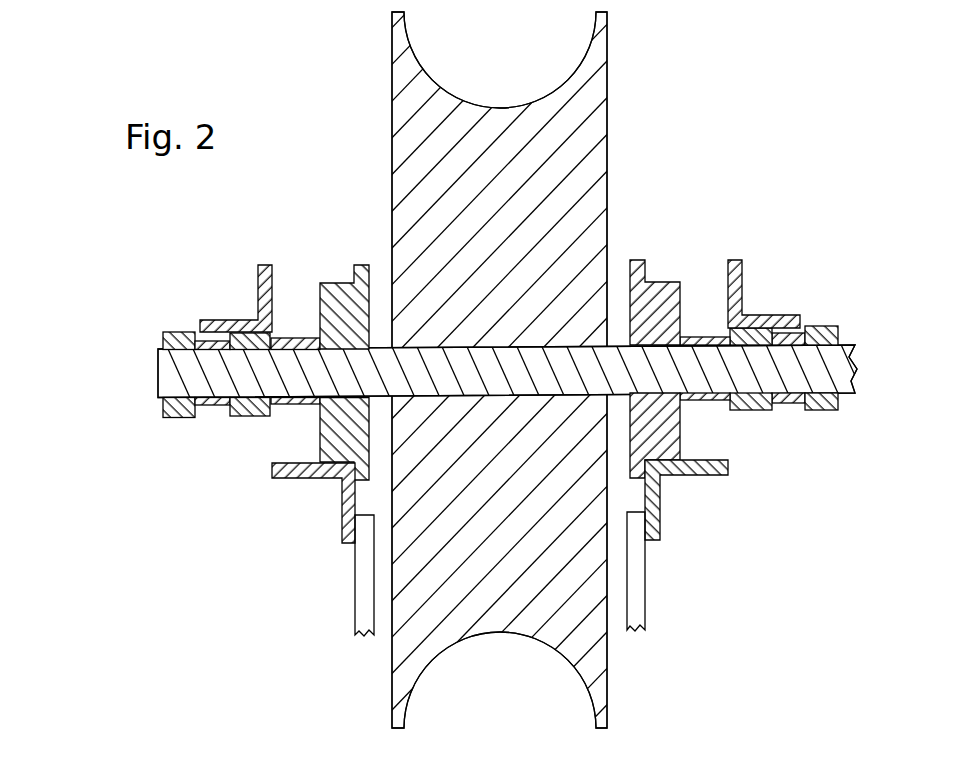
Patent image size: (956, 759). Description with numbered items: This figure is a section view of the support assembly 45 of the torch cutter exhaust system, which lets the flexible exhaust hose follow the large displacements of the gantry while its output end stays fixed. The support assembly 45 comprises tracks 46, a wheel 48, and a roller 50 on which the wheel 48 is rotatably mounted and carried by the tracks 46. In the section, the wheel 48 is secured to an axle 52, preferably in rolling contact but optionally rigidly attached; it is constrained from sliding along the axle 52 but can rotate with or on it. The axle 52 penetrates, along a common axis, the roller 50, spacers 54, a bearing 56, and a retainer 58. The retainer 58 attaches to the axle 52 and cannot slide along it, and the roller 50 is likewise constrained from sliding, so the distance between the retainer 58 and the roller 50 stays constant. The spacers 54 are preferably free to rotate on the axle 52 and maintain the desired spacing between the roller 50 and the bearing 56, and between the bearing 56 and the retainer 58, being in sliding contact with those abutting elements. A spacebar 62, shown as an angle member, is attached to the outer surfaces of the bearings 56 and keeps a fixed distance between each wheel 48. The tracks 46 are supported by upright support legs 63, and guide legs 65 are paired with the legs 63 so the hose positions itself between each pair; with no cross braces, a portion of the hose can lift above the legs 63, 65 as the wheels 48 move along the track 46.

The support assembly 45 is at (122, 228).
The tracks 46 is at (348, 550).
The wheel 48 is at (557, 597).
The roller 50 is at (348, 297).
The axle 52 is at (614, 345).
The spacers 54 is at (298, 338).
The bearing 56 is at (252, 417).
The retainer 58 is at (163, 405).
The spacebar 62 is at (227, 318).
The support legs 63 is at (365, 588).
The guide legs 65 is at (648, 573).